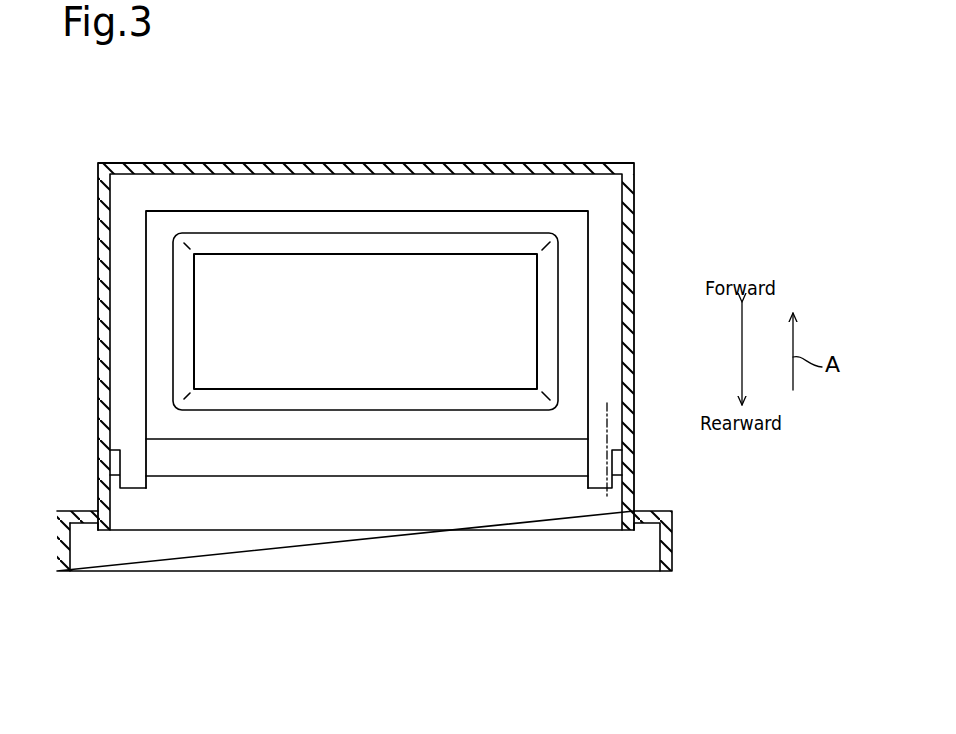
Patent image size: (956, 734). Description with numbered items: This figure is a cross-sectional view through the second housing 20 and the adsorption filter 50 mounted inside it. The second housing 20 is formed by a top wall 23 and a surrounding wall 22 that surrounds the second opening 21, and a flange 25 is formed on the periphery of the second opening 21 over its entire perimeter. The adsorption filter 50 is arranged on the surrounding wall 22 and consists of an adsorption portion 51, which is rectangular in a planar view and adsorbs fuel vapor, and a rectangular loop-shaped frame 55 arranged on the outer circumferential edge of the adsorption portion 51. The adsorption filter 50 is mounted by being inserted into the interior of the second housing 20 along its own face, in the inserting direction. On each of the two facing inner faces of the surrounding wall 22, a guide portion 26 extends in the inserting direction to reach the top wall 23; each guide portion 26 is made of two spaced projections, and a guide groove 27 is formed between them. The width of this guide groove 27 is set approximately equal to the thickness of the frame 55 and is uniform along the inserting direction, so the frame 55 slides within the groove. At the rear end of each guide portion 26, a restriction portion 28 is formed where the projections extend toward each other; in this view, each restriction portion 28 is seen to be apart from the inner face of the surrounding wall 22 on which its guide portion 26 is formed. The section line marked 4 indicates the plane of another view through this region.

The second housing 20 is at (87, 130).
The second opening 21 is at (362, 514).
The surrounding wall 22 is at (634, 338).
The top wall 23 is at (368, 163).
The flange 25 is at (88, 511).
The guide portion 26 is at (140, 328).
The guide groove 27 is at (132, 300).
The restriction portion 28 is at (147, 479).
The adsorption filter 50 is at (367, 451).
The adsorption portion 51 is at (413, 372).
The frame 55 is at (333, 462).
The section line IV-IV 4 is at (607, 403).